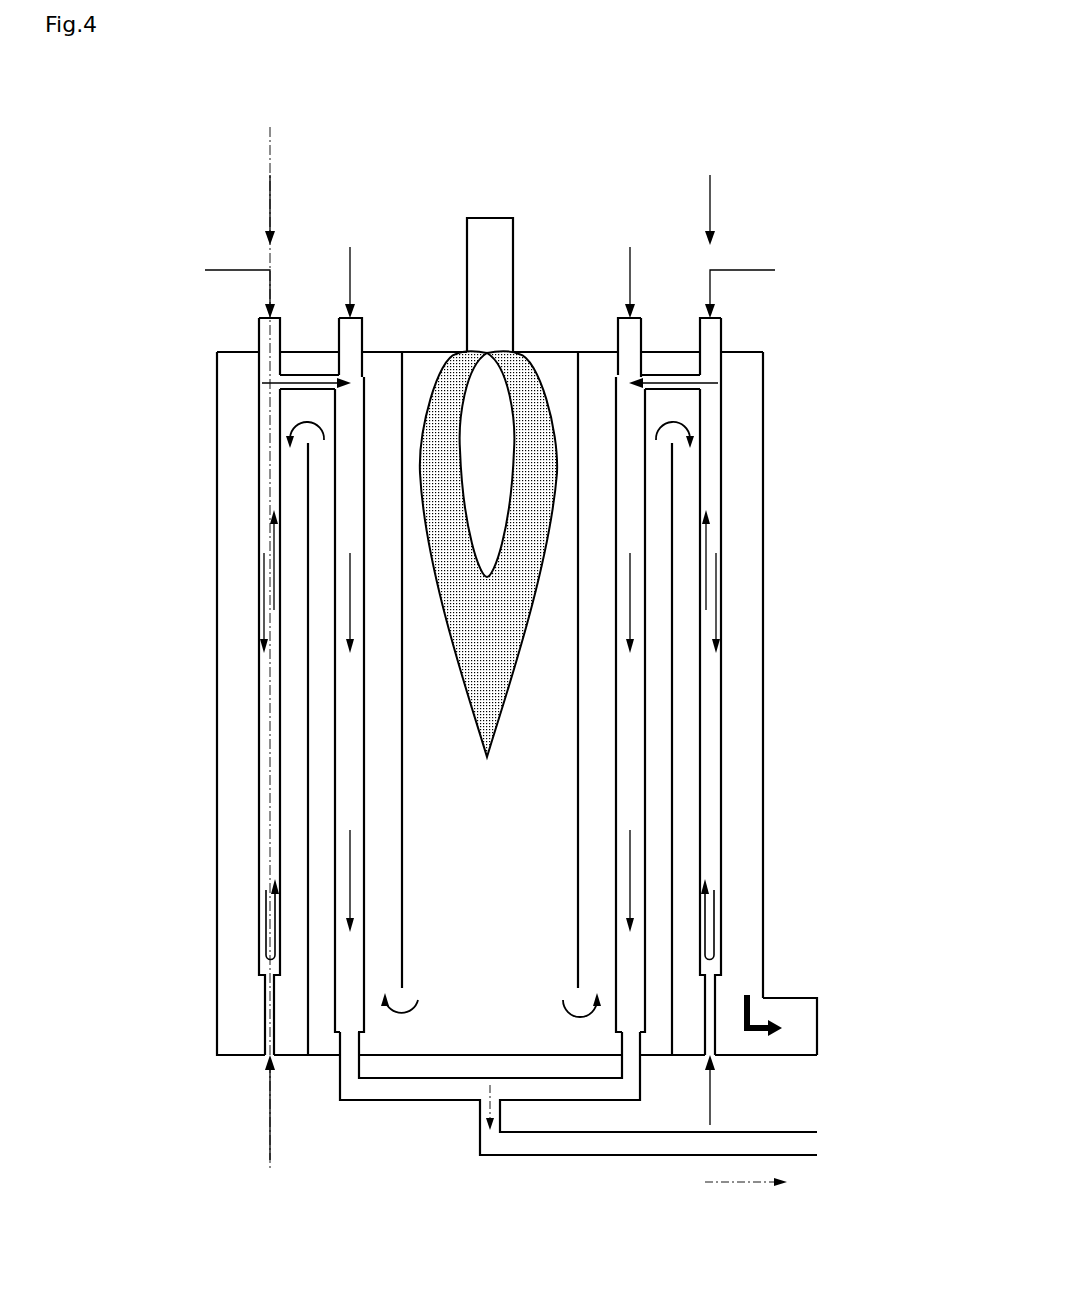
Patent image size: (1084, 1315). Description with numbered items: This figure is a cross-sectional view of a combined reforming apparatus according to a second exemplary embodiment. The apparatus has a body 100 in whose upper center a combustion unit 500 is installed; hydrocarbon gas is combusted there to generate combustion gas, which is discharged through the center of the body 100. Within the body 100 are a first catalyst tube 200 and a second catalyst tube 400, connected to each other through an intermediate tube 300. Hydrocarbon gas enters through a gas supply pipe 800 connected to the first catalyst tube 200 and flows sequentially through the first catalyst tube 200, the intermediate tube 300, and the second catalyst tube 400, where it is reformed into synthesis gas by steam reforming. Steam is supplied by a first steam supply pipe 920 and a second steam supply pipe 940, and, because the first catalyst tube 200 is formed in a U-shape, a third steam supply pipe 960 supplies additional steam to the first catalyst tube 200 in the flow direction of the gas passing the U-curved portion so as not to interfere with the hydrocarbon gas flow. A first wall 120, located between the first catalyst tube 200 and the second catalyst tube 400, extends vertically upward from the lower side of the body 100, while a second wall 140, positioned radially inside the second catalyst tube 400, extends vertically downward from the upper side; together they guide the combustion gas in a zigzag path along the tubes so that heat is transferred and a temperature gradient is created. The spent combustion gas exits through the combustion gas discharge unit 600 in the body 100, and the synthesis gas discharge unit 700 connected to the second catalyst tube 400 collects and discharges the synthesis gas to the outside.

The body 100 is at (771, 549).
The first wall 120 is at (308, 803).
The second wall 140 is at (402, 603).
The first catalyst tube 200 is at (723, 680).
The intermediate tube 300 is at (283, 397).
The second catalyst tube 400 is at (327, 697).
The combustion unit 500 is at (460, 199).
The combustion gas discharge unit 600 is at (827, 985).
The synthesis gas discharge unit 700 is at (460, 1147).
The gas supply pipe 800 is at (236, 271).
The first steam supply pipe 920 is at (271, 204).
The second steam supply pipe 940 is at (351, 270).
The third steam supply pipe 960 is at (263, 1005).